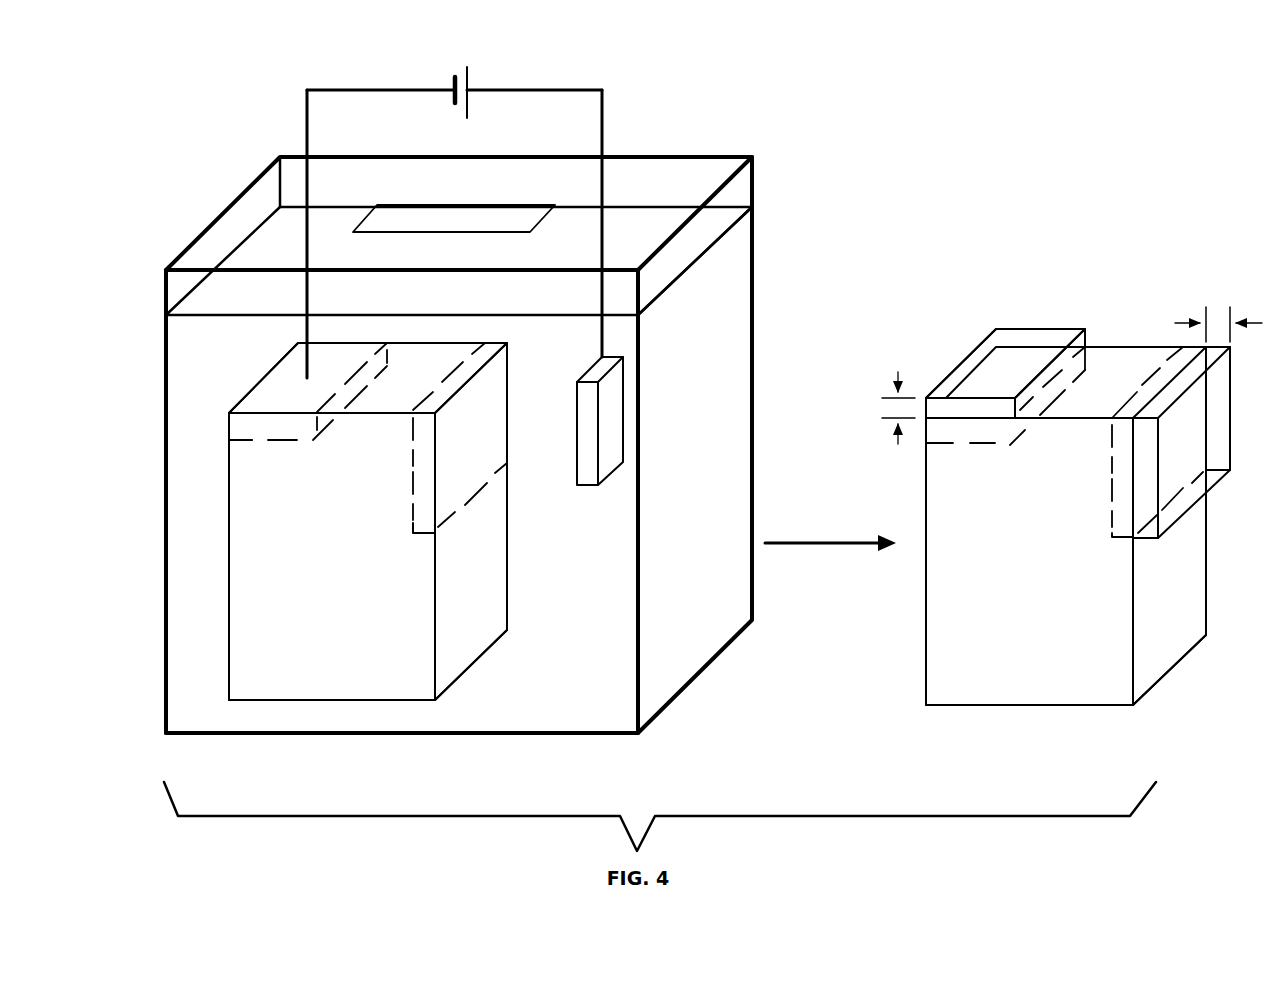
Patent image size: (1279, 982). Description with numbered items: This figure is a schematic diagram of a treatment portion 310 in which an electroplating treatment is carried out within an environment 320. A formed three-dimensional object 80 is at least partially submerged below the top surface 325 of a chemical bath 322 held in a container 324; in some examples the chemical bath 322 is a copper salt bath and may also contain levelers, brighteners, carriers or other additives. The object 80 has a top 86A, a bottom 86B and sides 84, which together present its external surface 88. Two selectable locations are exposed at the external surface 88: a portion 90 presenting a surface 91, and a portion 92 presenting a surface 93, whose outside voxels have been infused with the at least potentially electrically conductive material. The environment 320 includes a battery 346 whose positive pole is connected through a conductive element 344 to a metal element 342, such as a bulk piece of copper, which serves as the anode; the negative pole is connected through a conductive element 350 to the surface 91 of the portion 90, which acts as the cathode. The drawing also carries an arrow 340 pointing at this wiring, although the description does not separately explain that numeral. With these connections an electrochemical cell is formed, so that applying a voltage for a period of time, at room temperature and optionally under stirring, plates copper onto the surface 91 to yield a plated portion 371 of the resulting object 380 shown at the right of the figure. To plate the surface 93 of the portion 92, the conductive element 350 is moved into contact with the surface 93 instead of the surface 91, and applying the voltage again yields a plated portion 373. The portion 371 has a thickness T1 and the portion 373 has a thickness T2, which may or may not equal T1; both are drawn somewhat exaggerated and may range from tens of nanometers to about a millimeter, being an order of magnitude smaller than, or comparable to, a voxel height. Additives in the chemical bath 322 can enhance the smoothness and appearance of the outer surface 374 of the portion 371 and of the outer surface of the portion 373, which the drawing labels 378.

The treatment portion 310 is at (257, 128).
The environment 320 is at (237, 200).
The chemical bath 322 is at (492, 235).
The container 324 is at (162, 444).
The top surface 325 is at (703, 252).
The electrical circuit 340 is at (549, 82).
The metal element 342 is at (585, 487).
The conductive element 344 is at (606, 110).
The battery 346 is at (466, 66).
The conductive element 350 is at (313, 118).
The 3D object 80 is at (222, 515).
The sides 84 is at (430, 636).
The top 86A is at (410, 357).
The bottom 86B is at (330, 702).
The external surface 88 is at (258, 553).
The portion 90 is at (288, 366).
The surface 91 is at (288, 400).
The portion 92 is at (404, 478).
The surface 93 is at (470, 483).
The portion 371 is at (1057, 320).
The portion 373 is at (1242, 399).
The surface 374 is at (1013, 360).
The outer surface of second coating layer 378 is at (1187, 448).
The 3D object 380 is at (965, 611).
The thickness T1 is at (883, 408).
The thickness T2 is at (1218, 314).